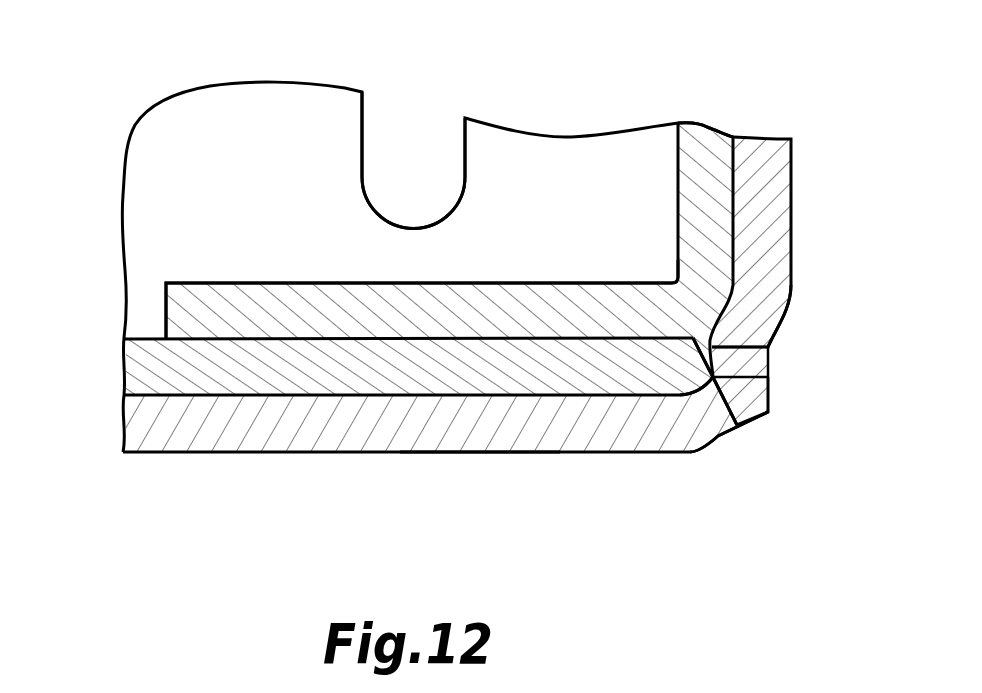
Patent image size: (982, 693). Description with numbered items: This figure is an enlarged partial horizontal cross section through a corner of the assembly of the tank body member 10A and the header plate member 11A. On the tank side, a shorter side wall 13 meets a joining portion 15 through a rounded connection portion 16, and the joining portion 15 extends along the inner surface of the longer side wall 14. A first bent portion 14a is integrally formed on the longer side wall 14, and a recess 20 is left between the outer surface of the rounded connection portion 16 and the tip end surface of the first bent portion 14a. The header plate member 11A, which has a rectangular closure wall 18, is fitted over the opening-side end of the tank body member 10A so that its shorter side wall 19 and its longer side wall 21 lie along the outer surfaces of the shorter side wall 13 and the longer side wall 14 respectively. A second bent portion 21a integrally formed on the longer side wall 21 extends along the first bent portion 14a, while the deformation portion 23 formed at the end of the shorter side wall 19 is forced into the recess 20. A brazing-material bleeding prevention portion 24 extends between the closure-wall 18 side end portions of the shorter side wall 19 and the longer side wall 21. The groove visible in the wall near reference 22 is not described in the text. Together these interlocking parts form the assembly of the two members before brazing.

The tank body member 10A is at (713, 109).
The header plate member 11A is at (488, 466).
The shorter side wall 13 is at (700, 165).
The longer side wall 14 is at (137, 370).
The first bent portion 14a is at (688, 378).
The joining portion 15 is at (264, 308).
The rounded connection portion 16 is at (683, 288).
The closure wall 18 is at (188, 142).
The shorter side wall 19 is at (780, 193).
The recess 20 is at (755, 348).
The longer side wall 21 is at (350, 440).
The second bent portion 21a is at (716, 436).
The groove 22 is at (367, 115).
The deformation portion 23 is at (765, 318).
The brazing-material bleeding prevention portion 24 is at (766, 412).